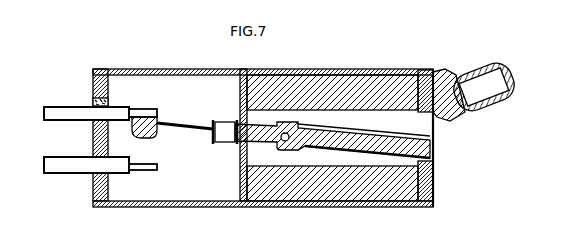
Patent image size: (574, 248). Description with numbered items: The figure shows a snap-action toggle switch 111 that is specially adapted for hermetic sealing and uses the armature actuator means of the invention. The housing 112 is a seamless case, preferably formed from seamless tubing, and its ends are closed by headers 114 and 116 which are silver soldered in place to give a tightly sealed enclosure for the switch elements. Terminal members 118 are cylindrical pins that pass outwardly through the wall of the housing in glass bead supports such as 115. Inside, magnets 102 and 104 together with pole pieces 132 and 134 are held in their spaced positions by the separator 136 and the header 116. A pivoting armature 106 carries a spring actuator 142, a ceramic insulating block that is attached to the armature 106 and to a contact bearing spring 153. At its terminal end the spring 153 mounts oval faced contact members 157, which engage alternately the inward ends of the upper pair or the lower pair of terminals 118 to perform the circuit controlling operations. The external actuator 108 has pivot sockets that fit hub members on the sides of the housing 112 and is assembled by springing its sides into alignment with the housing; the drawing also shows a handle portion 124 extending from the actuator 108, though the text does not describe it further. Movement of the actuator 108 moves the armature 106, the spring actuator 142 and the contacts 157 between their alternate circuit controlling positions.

The snap-action toggle switch 111 is at (333, 54).
The magnet 102 is at (356, 80).
The magnet 104 is at (390, 195).
The armature 106 is at (375, 118).
The actuator 108 is at (458, 117).
The housing 112 is at (163, 207).
The header 114 is at (93, 84).
The glass bead support 115 is at (93, 101).
The header 116 is at (435, 179).
The terminal member 118 is at (70, 157).
The shaft 124 is at (485, 67).
The pole piece 132 is at (415, 72).
The pole piece 134 is at (435, 161).
The separator 136 is at (244, 69).
The spring actuator 142 is at (219, 120).
The contact bearing spring 153 is at (178, 124).
The contact member 157 is at (150, 138).